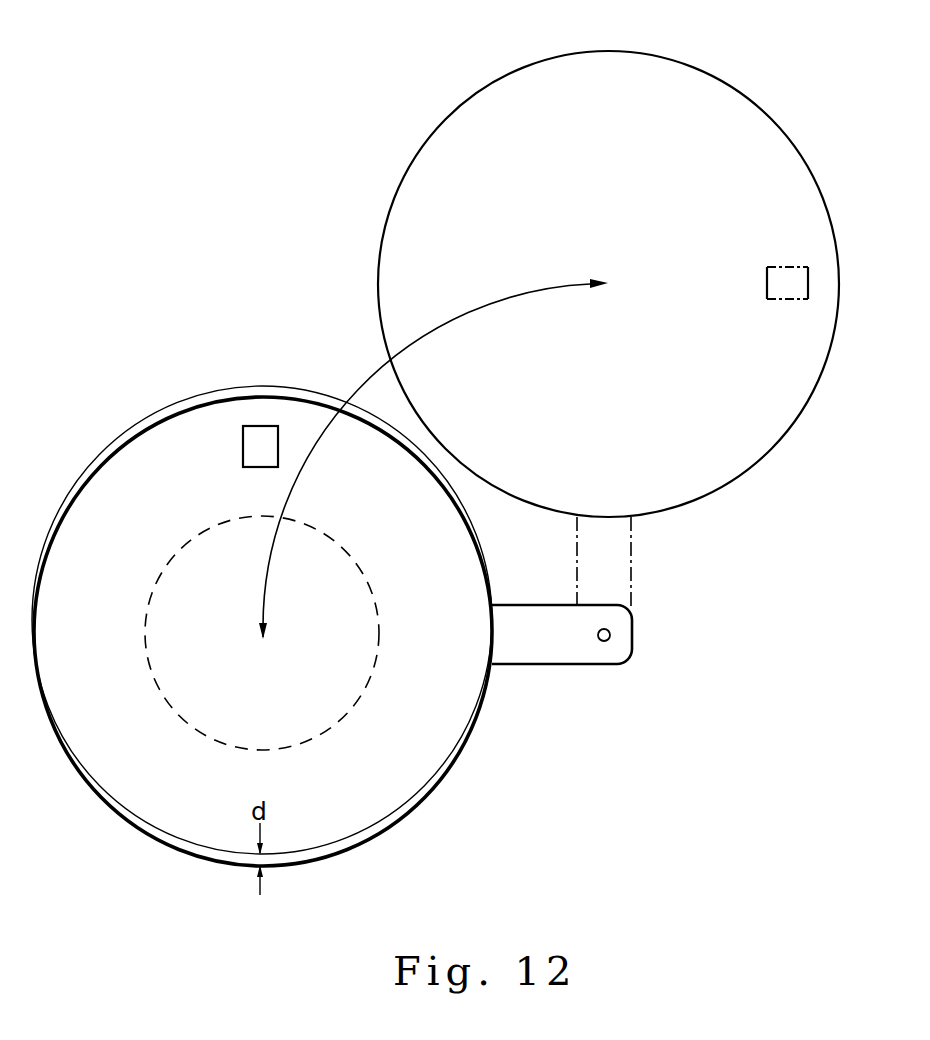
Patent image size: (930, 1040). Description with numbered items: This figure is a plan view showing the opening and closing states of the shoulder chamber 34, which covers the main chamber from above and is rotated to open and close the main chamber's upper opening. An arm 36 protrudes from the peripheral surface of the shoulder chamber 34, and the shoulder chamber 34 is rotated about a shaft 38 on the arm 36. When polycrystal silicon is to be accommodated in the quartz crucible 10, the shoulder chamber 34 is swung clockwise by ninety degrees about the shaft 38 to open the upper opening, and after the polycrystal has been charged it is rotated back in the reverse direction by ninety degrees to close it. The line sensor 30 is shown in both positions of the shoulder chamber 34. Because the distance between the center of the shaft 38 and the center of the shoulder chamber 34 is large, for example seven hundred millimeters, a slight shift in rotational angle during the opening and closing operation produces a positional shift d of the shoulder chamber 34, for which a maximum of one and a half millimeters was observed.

The quartz crucible 10 is at (358, 566).
The line sensor 30 is at (243, 458).
The shoulder chamber 34 is at (378, 238).
The arm 36 is at (545, 666).
The shaft 38 is at (610, 636).